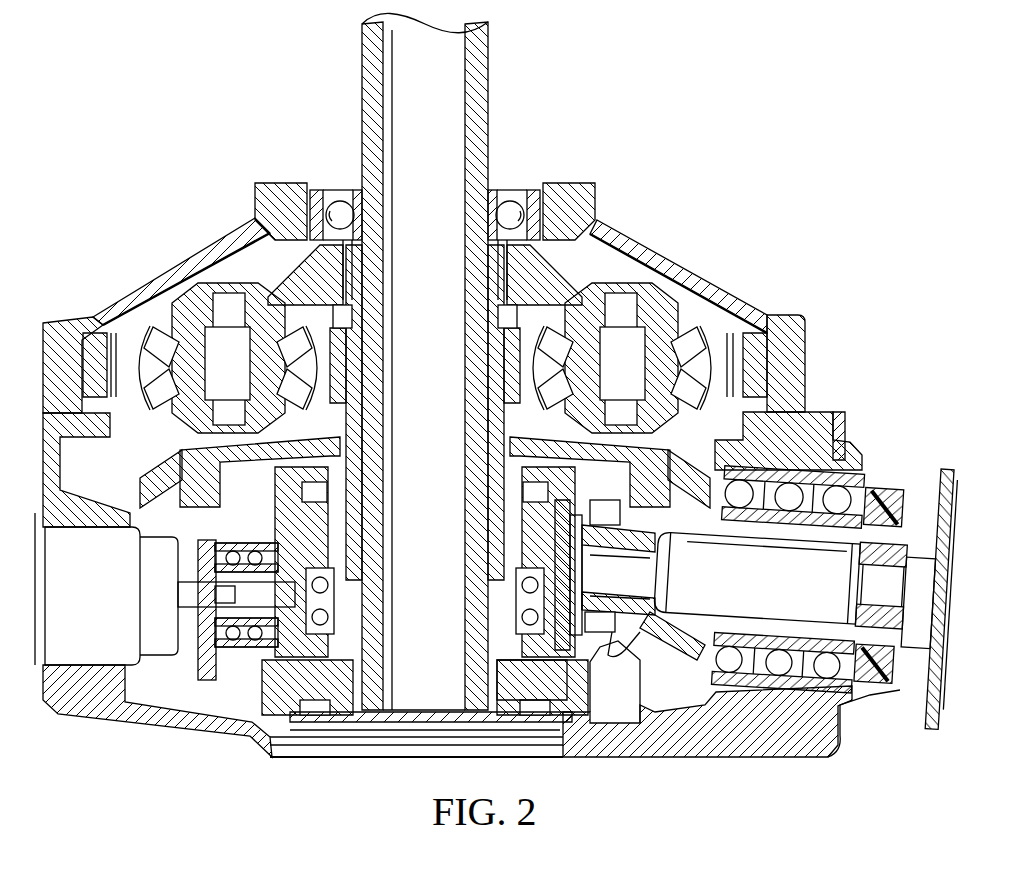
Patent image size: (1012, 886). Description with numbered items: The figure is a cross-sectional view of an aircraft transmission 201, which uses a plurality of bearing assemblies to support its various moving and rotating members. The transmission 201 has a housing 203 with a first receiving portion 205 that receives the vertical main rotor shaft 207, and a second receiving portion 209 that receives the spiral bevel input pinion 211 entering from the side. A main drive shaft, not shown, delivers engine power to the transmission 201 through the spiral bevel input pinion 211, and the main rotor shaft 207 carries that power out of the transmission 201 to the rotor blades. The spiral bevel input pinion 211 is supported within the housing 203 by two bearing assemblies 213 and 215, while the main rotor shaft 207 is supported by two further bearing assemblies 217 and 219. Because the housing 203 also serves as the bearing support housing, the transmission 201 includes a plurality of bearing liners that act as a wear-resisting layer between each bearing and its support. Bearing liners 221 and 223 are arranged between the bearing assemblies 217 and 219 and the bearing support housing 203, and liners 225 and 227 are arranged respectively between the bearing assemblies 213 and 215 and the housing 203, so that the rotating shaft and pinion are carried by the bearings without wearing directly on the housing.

The transmission 201 is at (700, 110).
The housing 203 is at (178, 272).
The first receiving portion 205 is at (562, 272).
The main rotor shaft 207 is at (480, 68).
The second receiving portion 209 is at (700, 450).
The spiral bevel input pinion 211 is at (905, 540).
The bearing assembly 213 is at (668, 700).
The bearing assembly 215 is at (700, 675).
The bearing assembly 217 is at (509, 175).
The bearing assembly 219 is at (359, 705).
The bearing liner 221 is at (533, 196).
The bearing liner 223 is at (320, 712).
The liner 225 is at (734, 690).
The liner 227 is at (633, 645).